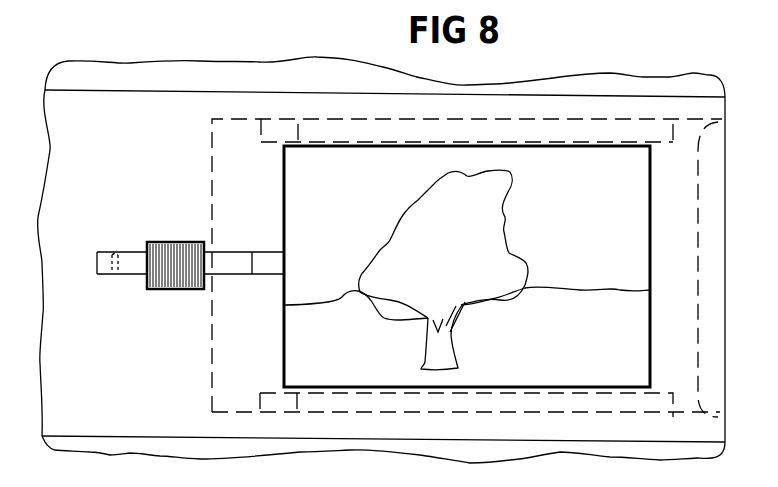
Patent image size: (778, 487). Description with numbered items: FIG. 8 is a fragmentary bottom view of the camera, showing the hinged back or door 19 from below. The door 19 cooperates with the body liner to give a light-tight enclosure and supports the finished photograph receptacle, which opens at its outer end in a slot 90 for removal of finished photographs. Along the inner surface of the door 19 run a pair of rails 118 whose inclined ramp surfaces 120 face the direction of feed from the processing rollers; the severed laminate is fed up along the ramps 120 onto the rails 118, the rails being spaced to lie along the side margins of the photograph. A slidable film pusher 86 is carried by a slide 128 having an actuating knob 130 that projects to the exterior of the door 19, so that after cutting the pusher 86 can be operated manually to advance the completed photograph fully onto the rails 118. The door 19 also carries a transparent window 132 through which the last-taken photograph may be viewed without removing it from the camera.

The door 19 is at (111, 369).
The slidable film pusher 86 is at (119, 251).
The slot 90 is at (702, 223).
The rails 118 is at (461, 120).
The inclined ramp surfaces 120 is at (284, 116).
The slide 128 is at (143, 280).
The actuating knob 130 is at (190, 242).
The transparent window 132 is at (357, 188).